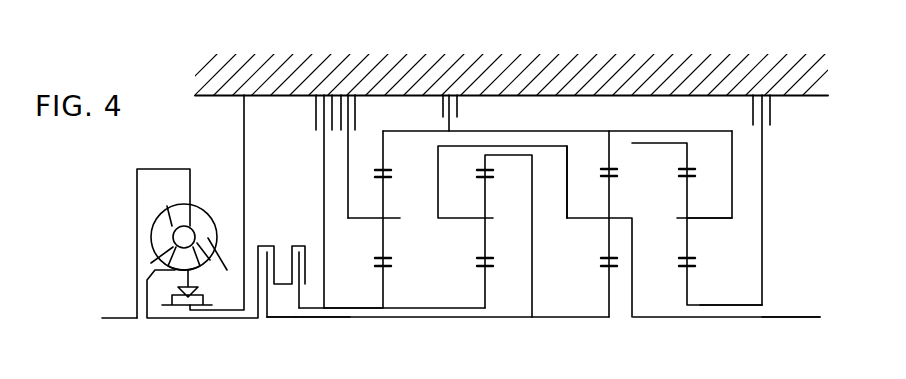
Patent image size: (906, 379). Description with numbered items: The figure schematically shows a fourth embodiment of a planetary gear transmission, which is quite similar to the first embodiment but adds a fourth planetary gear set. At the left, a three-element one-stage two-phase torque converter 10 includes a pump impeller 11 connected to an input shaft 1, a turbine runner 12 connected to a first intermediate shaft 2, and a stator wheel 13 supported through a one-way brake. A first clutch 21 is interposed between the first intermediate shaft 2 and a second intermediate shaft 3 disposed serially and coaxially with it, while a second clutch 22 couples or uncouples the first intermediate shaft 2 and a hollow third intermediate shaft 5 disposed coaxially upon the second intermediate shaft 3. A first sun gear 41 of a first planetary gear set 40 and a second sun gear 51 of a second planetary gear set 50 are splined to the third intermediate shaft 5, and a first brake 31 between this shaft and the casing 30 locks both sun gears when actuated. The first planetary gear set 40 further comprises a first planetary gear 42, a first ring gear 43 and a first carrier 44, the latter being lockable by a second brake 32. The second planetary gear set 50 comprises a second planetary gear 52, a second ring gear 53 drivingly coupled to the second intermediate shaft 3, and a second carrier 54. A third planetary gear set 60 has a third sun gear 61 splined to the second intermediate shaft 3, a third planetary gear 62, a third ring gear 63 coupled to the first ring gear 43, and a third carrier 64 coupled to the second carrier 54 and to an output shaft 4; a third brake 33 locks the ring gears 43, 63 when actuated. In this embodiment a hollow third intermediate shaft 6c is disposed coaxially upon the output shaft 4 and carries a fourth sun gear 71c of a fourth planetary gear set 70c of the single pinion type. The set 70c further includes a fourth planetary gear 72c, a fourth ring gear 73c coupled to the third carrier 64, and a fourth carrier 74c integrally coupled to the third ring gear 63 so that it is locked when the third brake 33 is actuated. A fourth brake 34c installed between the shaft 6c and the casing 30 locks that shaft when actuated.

The input shaft 1 is at (120, 318).
The first intermediate shaft 2 is at (180, 318).
The second intermediate shaft 3 is at (297, 317).
The output shaft 4 is at (783, 317).
The third intermediate shaft 5 is at (350, 308).
The hollow third intermediate shaft 6c is at (733, 305).
The torque converter 10 is at (217, 215).
The pump impeller 11 is at (196, 249).
The turbine runner 12 is at (172, 223).
The stator wheel 13 is at (180, 267).
The first clutch 21 is at (264, 245).
The second clutch 22 is at (299, 245).
The casing 30 is at (582, 71).
The first brake 31 is at (316, 92).
The second brake 32 is at (347, 92).
The third brake 33 is at (453, 92).
The fourth brake 34c is at (760, 92).
The first planetary gear set 40 is at (372, 244).
The first sun gear 41 is at (397, 279).
The first planetary gear 42 is at (385, 237).
The first ring gear 43 is at (383, 152).
The first carrier 44 is at (362, 218).
The second planetary gear set 50 is at (502, 230).
The second sun gear 51 is at (498, 279).
The second planetary gear 52 is at (486, 237).
The second ring gear 53 is at (492, 155).
The second carrier 54 is at (455, 218).
The third planetary gear set 60 is at (599, 230).
The third sun gear 61 is at (609, 284).
The third planetary gear 62 is at (609, 240).
The third ring gear 63 is at (609, 148).
The third carrier 64 is at (583, 217).
The fourth planetary gear set 70c is at (697, 230).
The fourth sun gear 71c is at (706, 280).
The fourth planetary gear 72c is at (688, 237).
The fourth ring gear 73c is at (687, 153).
The fourth carrier 74c is at (703, 217).